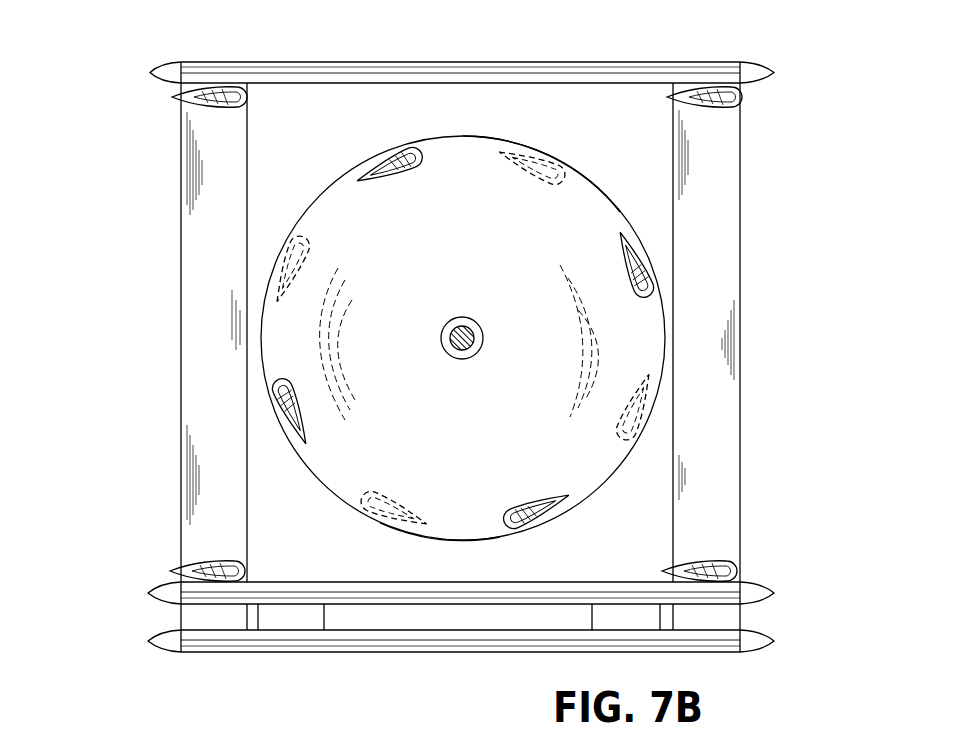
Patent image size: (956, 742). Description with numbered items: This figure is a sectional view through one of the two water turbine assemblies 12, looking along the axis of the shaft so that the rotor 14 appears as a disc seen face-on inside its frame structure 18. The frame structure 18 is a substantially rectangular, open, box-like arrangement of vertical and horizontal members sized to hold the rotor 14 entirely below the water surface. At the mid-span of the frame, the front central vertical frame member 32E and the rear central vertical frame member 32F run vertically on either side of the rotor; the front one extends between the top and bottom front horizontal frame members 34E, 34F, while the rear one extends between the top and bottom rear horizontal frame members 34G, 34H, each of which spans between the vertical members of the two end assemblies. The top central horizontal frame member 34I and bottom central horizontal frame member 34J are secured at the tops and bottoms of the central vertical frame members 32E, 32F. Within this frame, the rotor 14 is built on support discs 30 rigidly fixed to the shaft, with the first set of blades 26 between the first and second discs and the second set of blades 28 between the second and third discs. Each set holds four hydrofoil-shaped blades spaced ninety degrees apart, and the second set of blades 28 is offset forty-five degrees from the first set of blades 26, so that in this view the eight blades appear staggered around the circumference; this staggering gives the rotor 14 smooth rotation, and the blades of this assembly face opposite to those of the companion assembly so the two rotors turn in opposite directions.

The water turbine assembly 12 is at (135, 131).
The rotor 14 is at (331, 177).
The frame structure 18 is at (342, 61).
The first set of blades 26 is at (640, 243).
The second set of blades 28 is at (648, 384).
The support discs 30 is at (576, 168).
The front central vertical frame member 32E is at (740, 456).
The rear central vertical frame member 32F is at (180, 385).
The top front horizontal frame member 34E is at (716, 104).
The bottom front horizontal frame member 34F is at (718, 566).
The top rear horizontal frame member 34G is at (221, 106).
The bottom rear horizontal frame member 34H is at (213, 578).
The top central horizontal frame member 34I is at (658, 62).
The bottom central horizontal frame member 34J is at (719, 653).